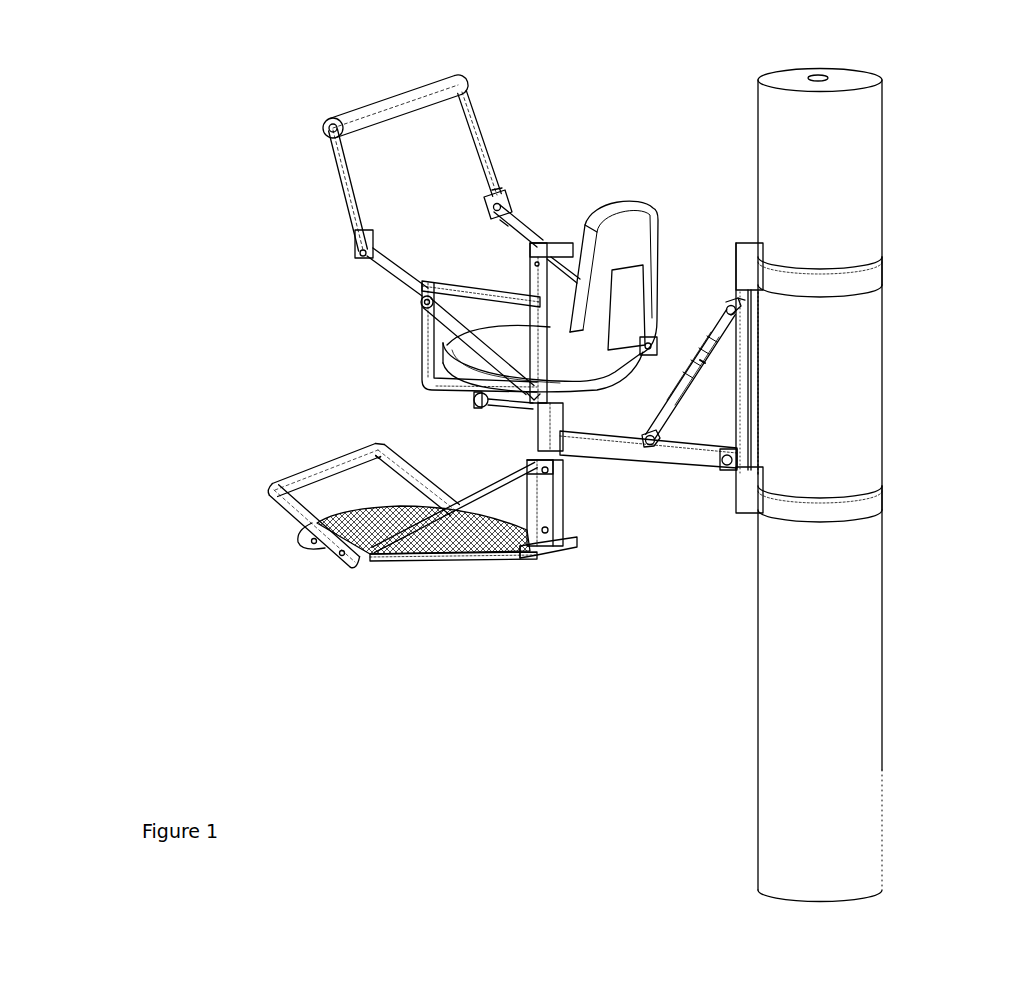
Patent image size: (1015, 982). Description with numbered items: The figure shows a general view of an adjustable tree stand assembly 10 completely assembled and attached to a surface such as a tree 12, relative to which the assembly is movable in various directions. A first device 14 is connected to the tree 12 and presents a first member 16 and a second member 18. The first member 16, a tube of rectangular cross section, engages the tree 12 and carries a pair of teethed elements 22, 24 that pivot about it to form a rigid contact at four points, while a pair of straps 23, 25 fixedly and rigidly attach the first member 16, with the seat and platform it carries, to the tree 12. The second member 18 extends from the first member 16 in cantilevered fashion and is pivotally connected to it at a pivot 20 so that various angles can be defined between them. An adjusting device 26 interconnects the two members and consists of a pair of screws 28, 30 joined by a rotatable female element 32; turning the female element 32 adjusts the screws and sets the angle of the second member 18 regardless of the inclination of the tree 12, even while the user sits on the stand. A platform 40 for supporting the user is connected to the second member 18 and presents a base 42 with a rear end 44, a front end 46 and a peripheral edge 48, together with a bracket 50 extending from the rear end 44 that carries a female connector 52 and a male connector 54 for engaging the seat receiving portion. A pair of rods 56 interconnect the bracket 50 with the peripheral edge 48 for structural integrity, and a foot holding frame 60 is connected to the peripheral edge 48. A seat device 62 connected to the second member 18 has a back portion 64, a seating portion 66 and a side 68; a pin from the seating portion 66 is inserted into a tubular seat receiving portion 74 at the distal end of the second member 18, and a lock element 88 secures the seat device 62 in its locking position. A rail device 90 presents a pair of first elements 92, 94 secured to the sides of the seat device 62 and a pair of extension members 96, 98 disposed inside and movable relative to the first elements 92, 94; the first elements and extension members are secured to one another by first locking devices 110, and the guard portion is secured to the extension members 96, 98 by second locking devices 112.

The adjustable tree stand assembly 10 is at (236, 214).
The tree 12 is at (850, 630).
The first device 14 is at (683, 464).
The first member 16 is at (750, 370).
The second member 18 is at (627, 450).
The pivotable connection 20 is at (722, 478).
The teethed element 22 is at (752, 285).
The strap 23 is at (862, 273).
The teethed element 24 is at (748, 512).
The strap 25 is at (868, 503).
The adjusting device 26 is at (688, 340).
The screw 28 is at (662, 418).
The screw 30 is at (727, 305).
The female element 32 is at (687, 373).
The platform 40 is at (408, 566).
The base 42 is at (460, 530).
The rear end 44 is at (565, 550).
The front end 46 is at (297, 540).
The peripheral edge 48 is at (497, 556).
The bracket 50 is at (543, 554).
The female connector 52 is at (548, 530).
The male connector 54 is at (543, 468).
The rods 56 is at (490, 493).
The foot holding frame 60 is at (297, 477).
The seat device 62 is at (594, 216).
The back portion 64 is at (625, 202).
The seating portion 66 is at (455, 367).
The side 68 is at (475, 283).
The seat receiving portion 74 is at (552, 430).
The lock element 88 is at (470, 410).
The rail device 90 is at (383, 96).
The first element 92 is at (425, 292).
The first element 94 is at (545, 243).
The extension member 96 is at (420, 295).
The extension member 98 is at (530, 233).
The first locking device 110 is at (430, 305).
The second locking device 112 is at (360, 250).